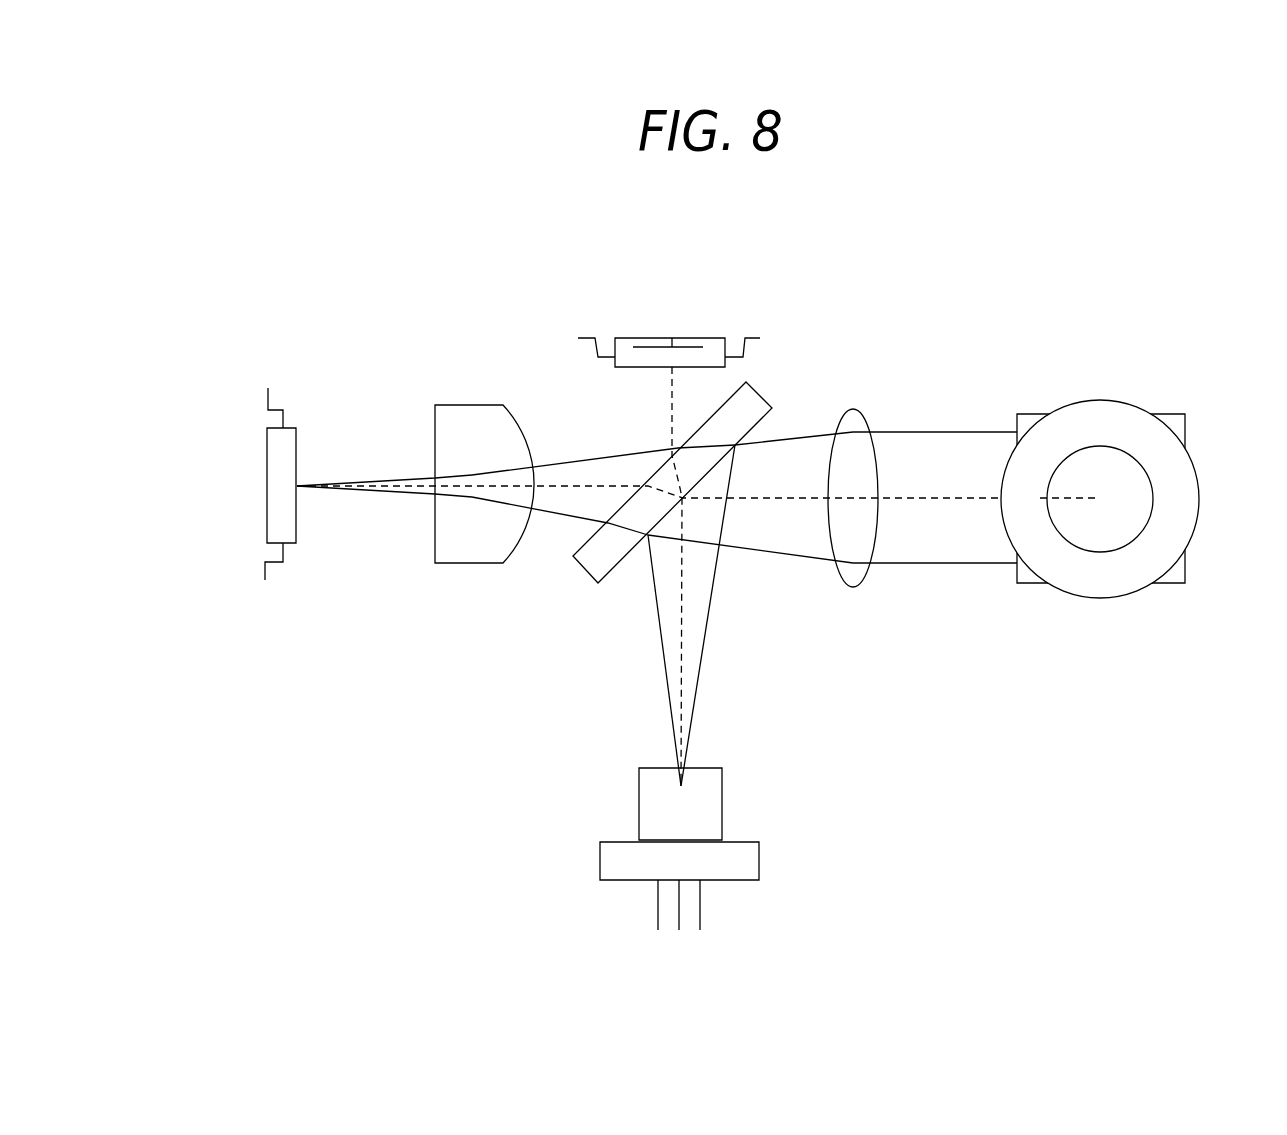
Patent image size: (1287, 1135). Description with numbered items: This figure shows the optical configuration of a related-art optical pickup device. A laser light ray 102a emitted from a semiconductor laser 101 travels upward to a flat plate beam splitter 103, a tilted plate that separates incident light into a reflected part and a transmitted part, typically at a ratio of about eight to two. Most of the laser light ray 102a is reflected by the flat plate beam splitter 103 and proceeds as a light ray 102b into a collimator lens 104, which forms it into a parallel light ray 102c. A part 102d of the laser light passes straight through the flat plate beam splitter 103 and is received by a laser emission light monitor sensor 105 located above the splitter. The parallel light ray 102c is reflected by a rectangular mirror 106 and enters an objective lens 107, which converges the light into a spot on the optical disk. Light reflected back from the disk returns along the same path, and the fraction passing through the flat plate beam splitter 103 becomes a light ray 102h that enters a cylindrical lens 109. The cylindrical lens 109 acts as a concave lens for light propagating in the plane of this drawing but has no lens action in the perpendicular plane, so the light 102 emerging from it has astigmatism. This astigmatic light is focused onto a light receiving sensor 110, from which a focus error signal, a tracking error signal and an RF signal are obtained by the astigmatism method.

The semiconductor laser 101 is at (747, 862).
The light beam 102 is at (397, 478).
The laser light ray 102a is at (695, 677).
The light ray 102b is at (782, 538).
The parallel light ray 102c is at (957, 548).
The part of the laser light 102d is at (667, 402).
The light ray 102h is at (537, 467).
The flat plate beam splitter 103 is at (583, 570).
The collimator lens 104 is at (855, 410).
The laser emission light monitor sensor 105 is at (660, 337).
The rectangular mirror 106 is at (1173, 577).
The objective lens 107 is at (1102, 408).
The cylindrical lens 109 is at (442, 565).
The light receiving sensor 110 is at (265, 510).